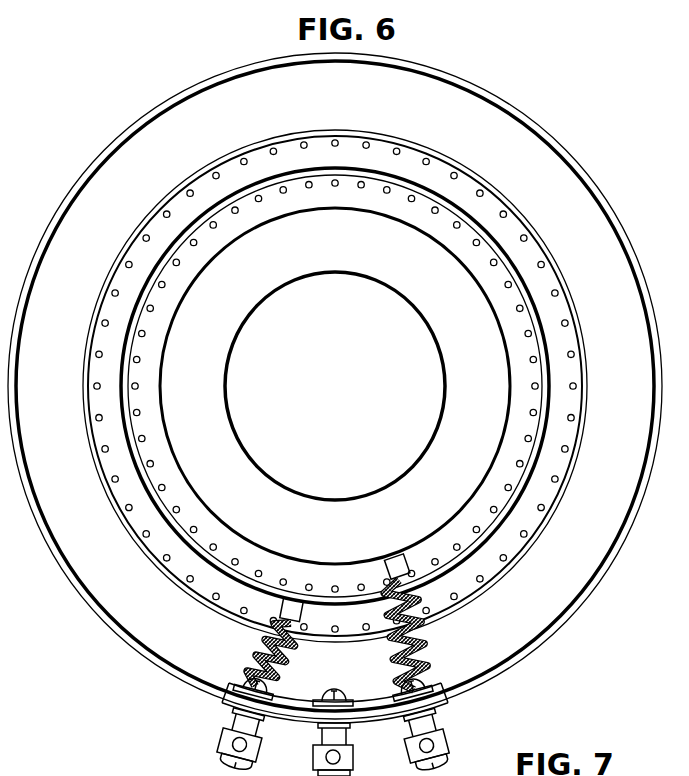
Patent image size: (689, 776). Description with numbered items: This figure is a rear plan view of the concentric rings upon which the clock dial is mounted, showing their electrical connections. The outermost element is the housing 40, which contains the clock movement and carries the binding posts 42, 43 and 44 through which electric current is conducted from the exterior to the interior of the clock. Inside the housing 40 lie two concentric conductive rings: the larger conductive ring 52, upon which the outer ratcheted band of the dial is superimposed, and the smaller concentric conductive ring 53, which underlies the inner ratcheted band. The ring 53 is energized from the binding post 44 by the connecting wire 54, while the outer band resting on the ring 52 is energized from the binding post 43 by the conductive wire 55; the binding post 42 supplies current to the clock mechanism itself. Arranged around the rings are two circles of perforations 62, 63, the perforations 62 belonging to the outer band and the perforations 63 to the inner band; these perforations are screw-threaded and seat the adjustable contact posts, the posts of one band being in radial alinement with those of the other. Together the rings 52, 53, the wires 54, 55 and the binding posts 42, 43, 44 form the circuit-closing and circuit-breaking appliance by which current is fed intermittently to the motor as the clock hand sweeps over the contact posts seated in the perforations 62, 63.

The housing 40 is at (586, 180).
The binding post 42 is at (323, 753).
The binding post 43 is at (227, 745).
The binding post 44 is at (450, 743).
The conductive ring 52 is at (508, 548).
The conductive ring 53 is at (440, 537).
The connecting wire 54 is at (426, 653).
The conductive wire 55 is at (250, 656).
The perforations 62 is at (575, 356).
The perforations 63 is at (530, 362).